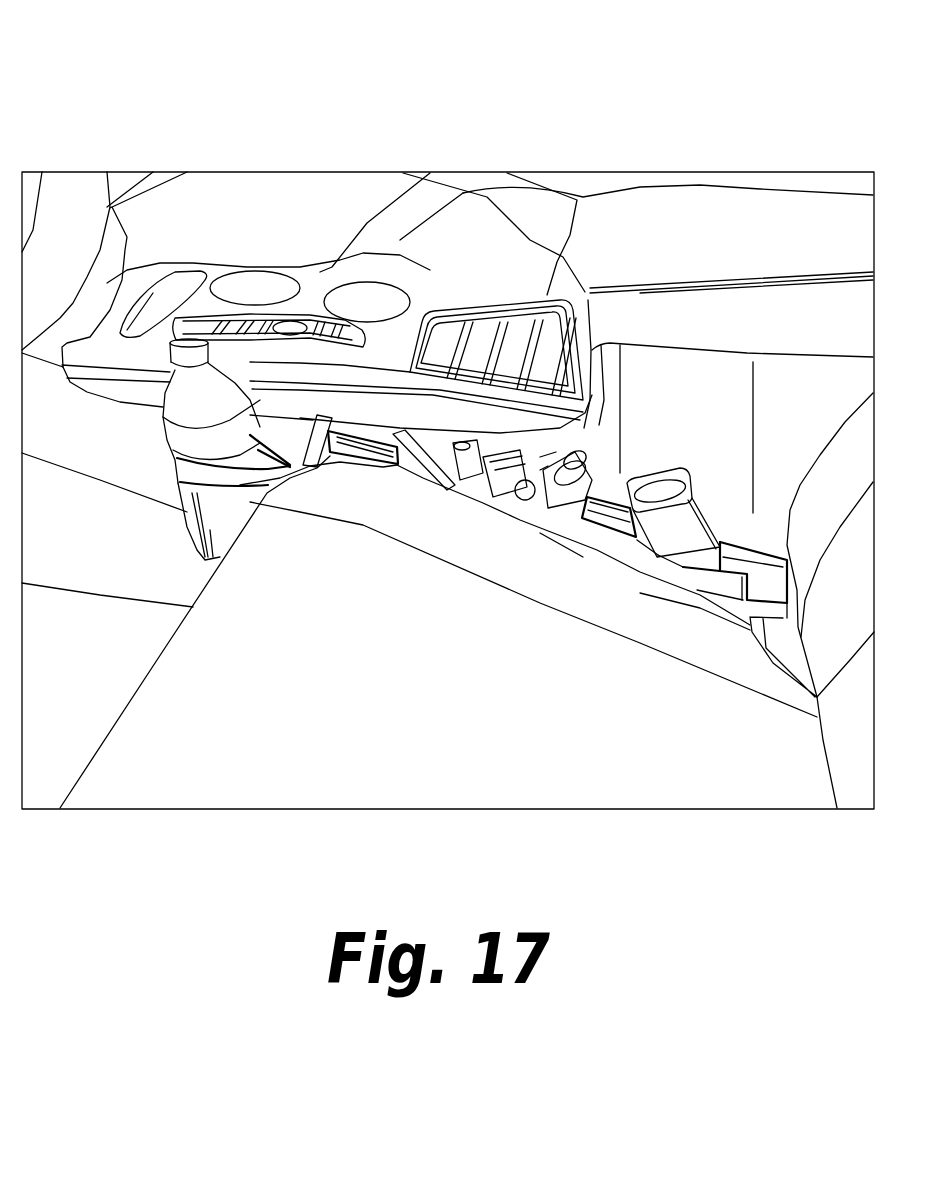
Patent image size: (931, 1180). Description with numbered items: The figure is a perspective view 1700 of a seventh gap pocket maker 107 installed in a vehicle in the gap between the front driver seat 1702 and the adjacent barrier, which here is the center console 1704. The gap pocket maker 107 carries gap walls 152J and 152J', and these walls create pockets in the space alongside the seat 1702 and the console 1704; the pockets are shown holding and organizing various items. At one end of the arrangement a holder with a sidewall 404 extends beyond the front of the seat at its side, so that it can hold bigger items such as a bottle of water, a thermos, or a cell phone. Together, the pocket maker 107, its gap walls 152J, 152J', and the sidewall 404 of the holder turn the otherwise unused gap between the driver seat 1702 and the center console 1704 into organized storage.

The perspective view 1700 is at (176, 60).
The seventh gap pocket maker 107 is at (753, 365).
The center console 1704 is at (716, 403).
The front driver seat 1702 is at (320, 795).
The sidewall 404 is at (217, 518).
The gap wall 152J is at (317, 525).
The gap wall 152J' is at (563, 593).